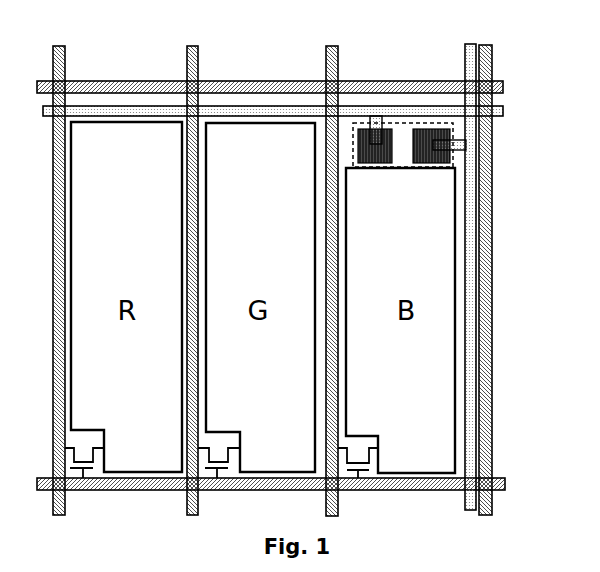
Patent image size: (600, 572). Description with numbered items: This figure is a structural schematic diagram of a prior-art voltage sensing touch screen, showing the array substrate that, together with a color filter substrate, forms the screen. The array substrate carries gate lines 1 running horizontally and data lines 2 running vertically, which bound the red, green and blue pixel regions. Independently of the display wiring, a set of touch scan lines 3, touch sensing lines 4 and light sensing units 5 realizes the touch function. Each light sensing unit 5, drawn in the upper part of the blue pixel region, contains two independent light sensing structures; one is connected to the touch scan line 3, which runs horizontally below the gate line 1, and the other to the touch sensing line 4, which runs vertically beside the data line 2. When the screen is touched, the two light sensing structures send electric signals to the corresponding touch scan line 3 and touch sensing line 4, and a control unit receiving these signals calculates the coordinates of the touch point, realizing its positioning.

The gate line 1 is at (503, 89).
The data line 2 is at (488, 278).
The touch scan line 3 is at (502, 112).
The touch sensing line 4 is at (472, 65).
The light sensing unit 5 is at (400, 123).